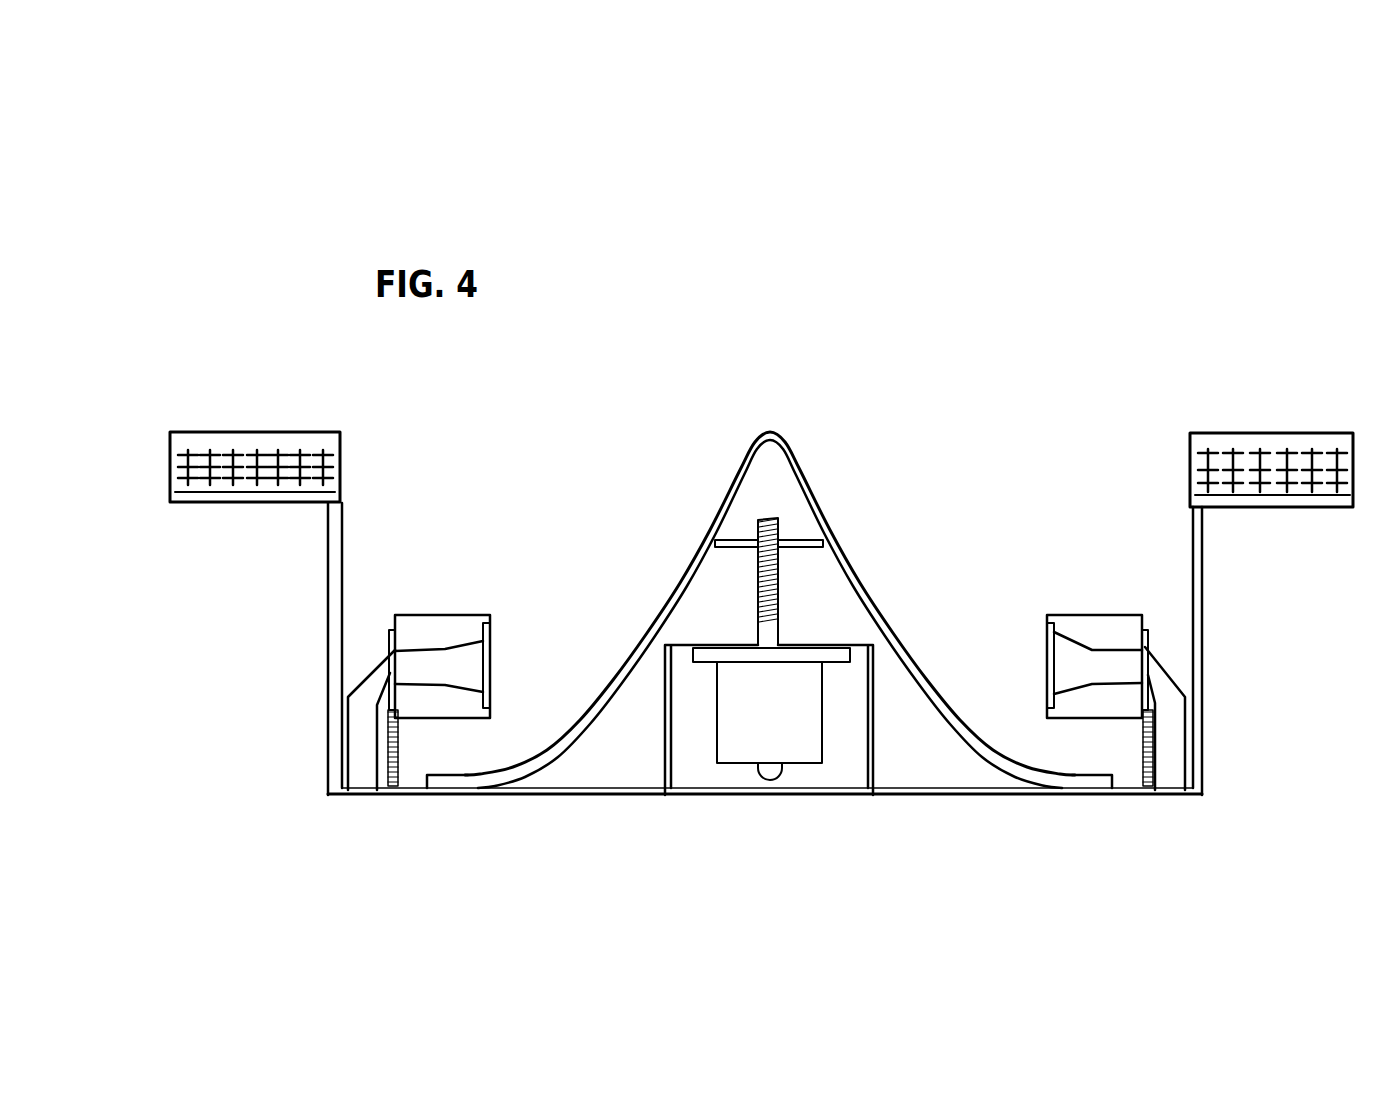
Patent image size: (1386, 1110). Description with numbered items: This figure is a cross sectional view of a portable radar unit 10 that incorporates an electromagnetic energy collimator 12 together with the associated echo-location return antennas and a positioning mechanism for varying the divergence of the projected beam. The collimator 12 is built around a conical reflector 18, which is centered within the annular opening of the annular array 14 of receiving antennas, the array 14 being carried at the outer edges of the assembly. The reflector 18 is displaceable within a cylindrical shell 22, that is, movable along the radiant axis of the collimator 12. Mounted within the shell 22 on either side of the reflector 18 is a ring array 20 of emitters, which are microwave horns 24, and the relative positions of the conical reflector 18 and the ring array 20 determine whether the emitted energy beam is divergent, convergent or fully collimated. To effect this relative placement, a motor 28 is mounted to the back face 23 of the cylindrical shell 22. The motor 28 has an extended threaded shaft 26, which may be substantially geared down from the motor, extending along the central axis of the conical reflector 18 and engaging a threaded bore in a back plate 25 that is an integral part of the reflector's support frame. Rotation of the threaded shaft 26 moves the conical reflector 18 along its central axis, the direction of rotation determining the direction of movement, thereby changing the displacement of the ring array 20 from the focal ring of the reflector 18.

The portable radar unit 10 is at (802, 150).
The energy collimator 12 is at (719, 449).
The annular array of receiving antennas 14 is at (170, 463).
The conical reflector 18 is at (808, 480).
The ring array of emitters 20 is at (490, 620).
The cylindrical shell 22 is at (1205, 608).
The back face 23 is at (553, 797).
The microwave horn 24 is at (470, 667).
The back plate 25 is at (733, 550).
The threaded shaft 26 is at (778, 583).
The motor 28 is at (798, 745).